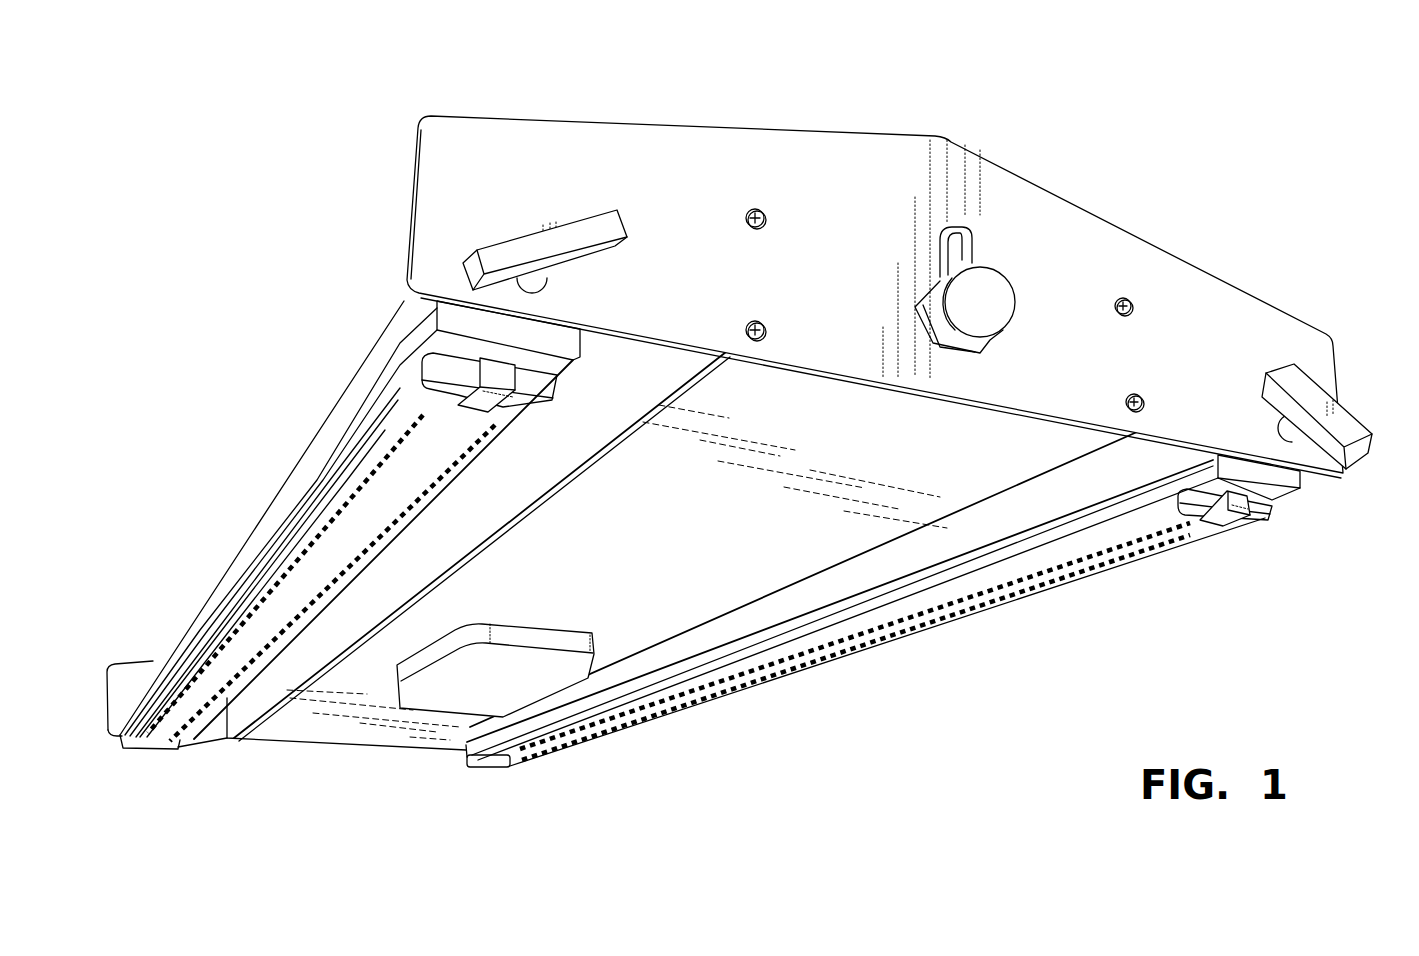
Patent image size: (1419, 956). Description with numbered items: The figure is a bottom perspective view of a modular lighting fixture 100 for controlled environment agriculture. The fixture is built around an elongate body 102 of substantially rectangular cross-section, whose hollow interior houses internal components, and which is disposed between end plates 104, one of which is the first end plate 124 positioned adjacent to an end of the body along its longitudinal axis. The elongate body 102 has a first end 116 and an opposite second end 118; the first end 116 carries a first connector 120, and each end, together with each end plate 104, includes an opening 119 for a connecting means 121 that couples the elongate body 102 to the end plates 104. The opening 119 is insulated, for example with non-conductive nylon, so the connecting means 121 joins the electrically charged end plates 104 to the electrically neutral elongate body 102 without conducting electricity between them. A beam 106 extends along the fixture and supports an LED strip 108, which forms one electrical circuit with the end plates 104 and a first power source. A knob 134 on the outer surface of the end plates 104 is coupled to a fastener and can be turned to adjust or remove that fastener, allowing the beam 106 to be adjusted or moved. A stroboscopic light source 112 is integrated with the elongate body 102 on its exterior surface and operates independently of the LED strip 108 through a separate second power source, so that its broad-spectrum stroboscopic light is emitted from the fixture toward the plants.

The modular lighting fixture 100 is at (751, 435).
The elongate body 102 is at (309, 727).
The end plates 104 is at (712, 155).
The beam 106 is at (385, 350).
The LED strip 108 is at (347, 500).
The stroboscopic light source 112 is at (462, 697).
The first end 116 is at (1271, 280).
The second end 118 is at (245, 748).
The opening 119 is at (742, 217).
The first connector 120 is at (918, 314).
The connecting means 121 is at (764, 211).
The first end plate 124 is at (1074, 228).
The knob 134 is at (1368, 429).